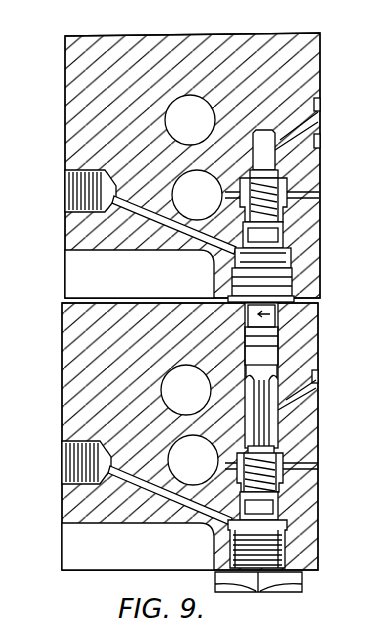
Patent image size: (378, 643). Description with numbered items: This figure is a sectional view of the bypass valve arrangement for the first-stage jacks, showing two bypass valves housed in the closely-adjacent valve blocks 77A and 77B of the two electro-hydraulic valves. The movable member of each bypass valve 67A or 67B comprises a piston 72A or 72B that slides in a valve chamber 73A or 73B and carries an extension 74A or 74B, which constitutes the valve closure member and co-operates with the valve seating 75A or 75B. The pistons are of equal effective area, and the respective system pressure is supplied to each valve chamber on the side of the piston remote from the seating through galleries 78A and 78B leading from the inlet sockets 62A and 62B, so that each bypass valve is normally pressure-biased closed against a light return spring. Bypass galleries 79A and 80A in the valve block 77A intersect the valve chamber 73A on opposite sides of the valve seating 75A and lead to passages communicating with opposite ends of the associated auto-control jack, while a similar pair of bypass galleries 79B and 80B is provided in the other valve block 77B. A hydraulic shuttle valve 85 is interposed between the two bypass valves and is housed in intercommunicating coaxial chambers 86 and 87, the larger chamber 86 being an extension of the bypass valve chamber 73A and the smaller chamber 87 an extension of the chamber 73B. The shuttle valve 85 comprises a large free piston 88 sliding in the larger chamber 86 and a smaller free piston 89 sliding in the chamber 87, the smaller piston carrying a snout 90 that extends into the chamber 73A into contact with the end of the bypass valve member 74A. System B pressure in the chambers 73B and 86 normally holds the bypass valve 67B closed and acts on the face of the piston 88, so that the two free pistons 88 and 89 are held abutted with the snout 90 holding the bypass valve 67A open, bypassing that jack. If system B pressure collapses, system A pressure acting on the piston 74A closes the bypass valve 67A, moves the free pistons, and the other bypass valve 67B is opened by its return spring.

The valve block 77B is at (282, 62).
The bypass gallery 79B is at (298, 128).
The valve seating 75B is at (276, 152).
The extension 74B is at (278, 176).
The bypass valve 67B is at (268, 200).
The bypass gallery 80B is at (288, 213).
The valve chamber 73B is at (270, 232).
The chamber 86 is at (284, 258).
The large piston 88 is at (283, 278).
The inlet socket 62B is at (86, 190).
The gallery 78B is at (118, 212).
The piston 72B is at (205, 244).
The hydraulic shuttle valve 85 is at (272, 320).
The smaller piston 89 is at (266, 345).
The chamber 87 is at (272, 374).
The bypass gallery 79A is at (302, 398).
The snout 90 is at (262, 418).
The valve seating 75A is at (274, 446).
The extension 74A is at (276, 460).
The bypass gallery 80A is at (290, 470).
The valve chamber 73A is at (262, 502).
The bypass valve 67A is at (265, 516).
The piston 72A is at (258, 541).
The valve block 77A is at (298, 552).
The inlet socket 62A is at (84, 470).
The gallery 78A is at (148, 490).